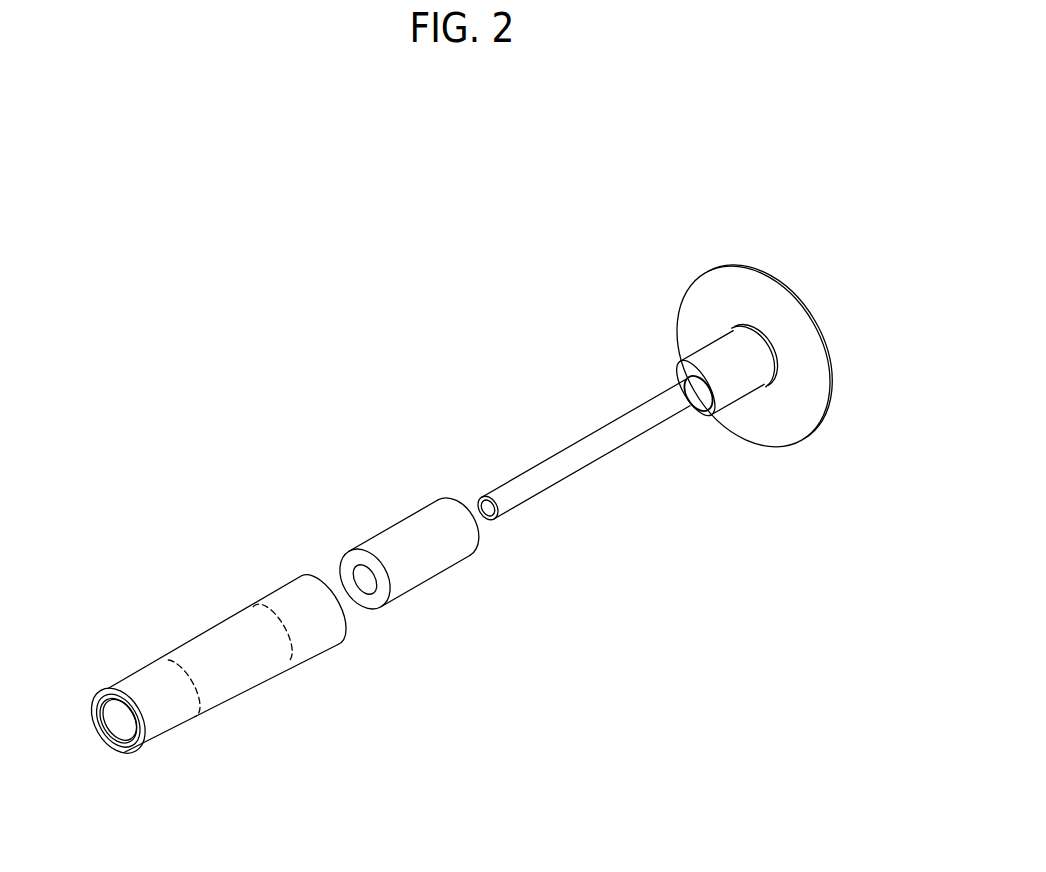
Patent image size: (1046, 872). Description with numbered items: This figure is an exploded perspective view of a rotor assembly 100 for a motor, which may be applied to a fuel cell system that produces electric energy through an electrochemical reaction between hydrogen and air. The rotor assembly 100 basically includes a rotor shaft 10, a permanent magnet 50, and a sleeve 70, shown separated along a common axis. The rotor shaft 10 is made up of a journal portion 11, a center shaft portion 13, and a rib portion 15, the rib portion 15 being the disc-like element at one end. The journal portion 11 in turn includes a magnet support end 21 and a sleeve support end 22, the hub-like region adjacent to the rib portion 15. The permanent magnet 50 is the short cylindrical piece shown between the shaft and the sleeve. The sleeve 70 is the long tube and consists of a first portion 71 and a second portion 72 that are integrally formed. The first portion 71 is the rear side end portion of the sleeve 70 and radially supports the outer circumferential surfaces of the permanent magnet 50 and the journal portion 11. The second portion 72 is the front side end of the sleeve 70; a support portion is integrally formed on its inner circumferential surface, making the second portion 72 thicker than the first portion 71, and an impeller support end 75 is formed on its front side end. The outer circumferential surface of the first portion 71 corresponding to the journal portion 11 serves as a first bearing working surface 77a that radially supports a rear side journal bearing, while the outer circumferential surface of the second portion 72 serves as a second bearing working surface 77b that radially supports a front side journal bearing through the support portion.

The rotor assembly 100 is at (479, 241).
The rotor shaft 10 is at (683, 450).
The journal portion 11 is at (736, 402).
The center shaft portion 13 is at (582, 437).
The rib portion 15 is at (741, 283).
The magnet support end 21 is at (677, 373).
The sleeve support end 22 is at (728, 329).
The permanent magnet 50 is at (437, 567).
The sleeve 70 is at (259, 720).
The first portion 71 is at (300, 576).
The second portion 72 is at (151, 662).
The impeller support end 75 is at (122, 756).
The first bearing working surface 77a is at (322, 654).
The second bearing working surface 77b is at (170, 741).